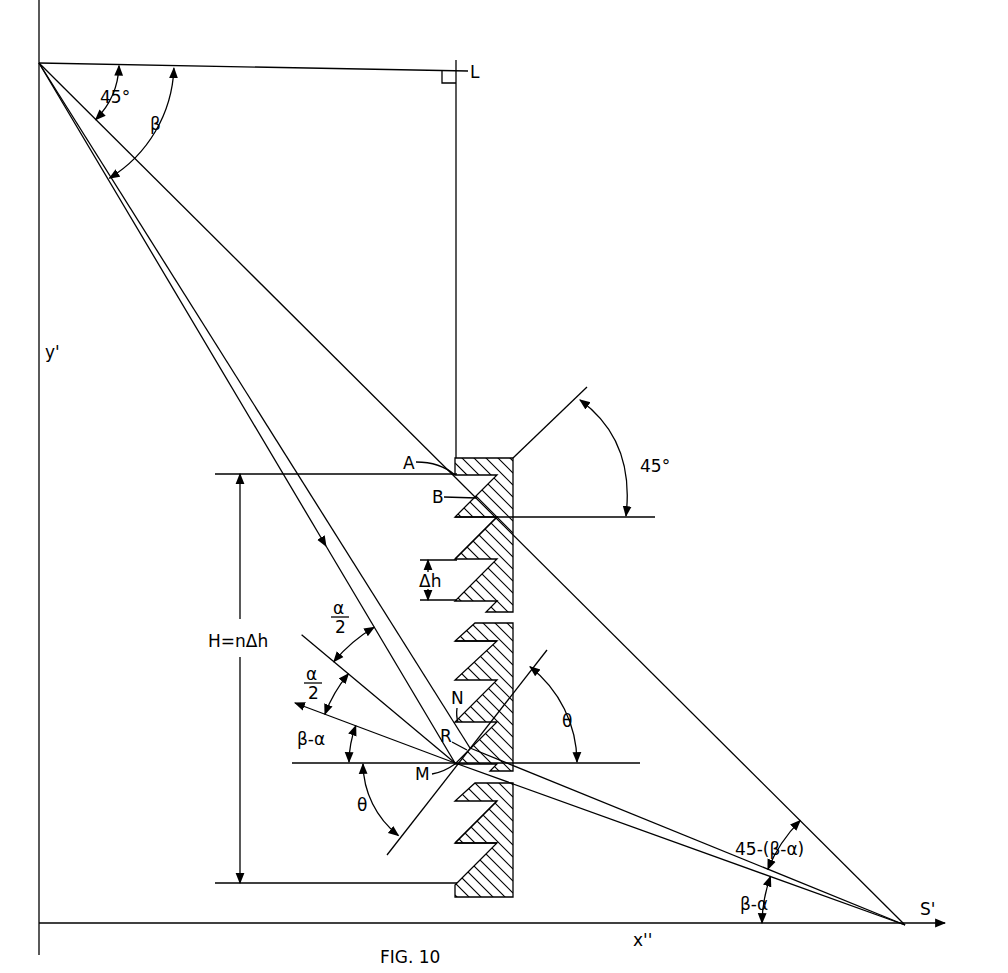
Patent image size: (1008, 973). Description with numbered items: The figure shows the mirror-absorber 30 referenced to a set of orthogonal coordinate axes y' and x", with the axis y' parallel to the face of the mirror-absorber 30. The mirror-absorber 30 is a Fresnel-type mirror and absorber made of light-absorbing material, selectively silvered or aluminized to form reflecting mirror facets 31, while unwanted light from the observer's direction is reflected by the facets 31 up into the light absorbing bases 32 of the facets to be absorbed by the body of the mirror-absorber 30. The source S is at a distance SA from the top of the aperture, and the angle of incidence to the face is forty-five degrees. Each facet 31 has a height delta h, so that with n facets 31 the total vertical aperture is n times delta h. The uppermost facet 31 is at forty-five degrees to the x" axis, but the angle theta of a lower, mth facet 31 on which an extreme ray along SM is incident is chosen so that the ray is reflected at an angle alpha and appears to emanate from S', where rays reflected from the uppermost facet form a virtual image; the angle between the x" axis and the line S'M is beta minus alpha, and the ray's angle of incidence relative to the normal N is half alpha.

The mirror-absorber 30 is at (519, 488).
The mirror facets 31 is at (478, 537).
The light absorbing bases 32 is at (473, 642).